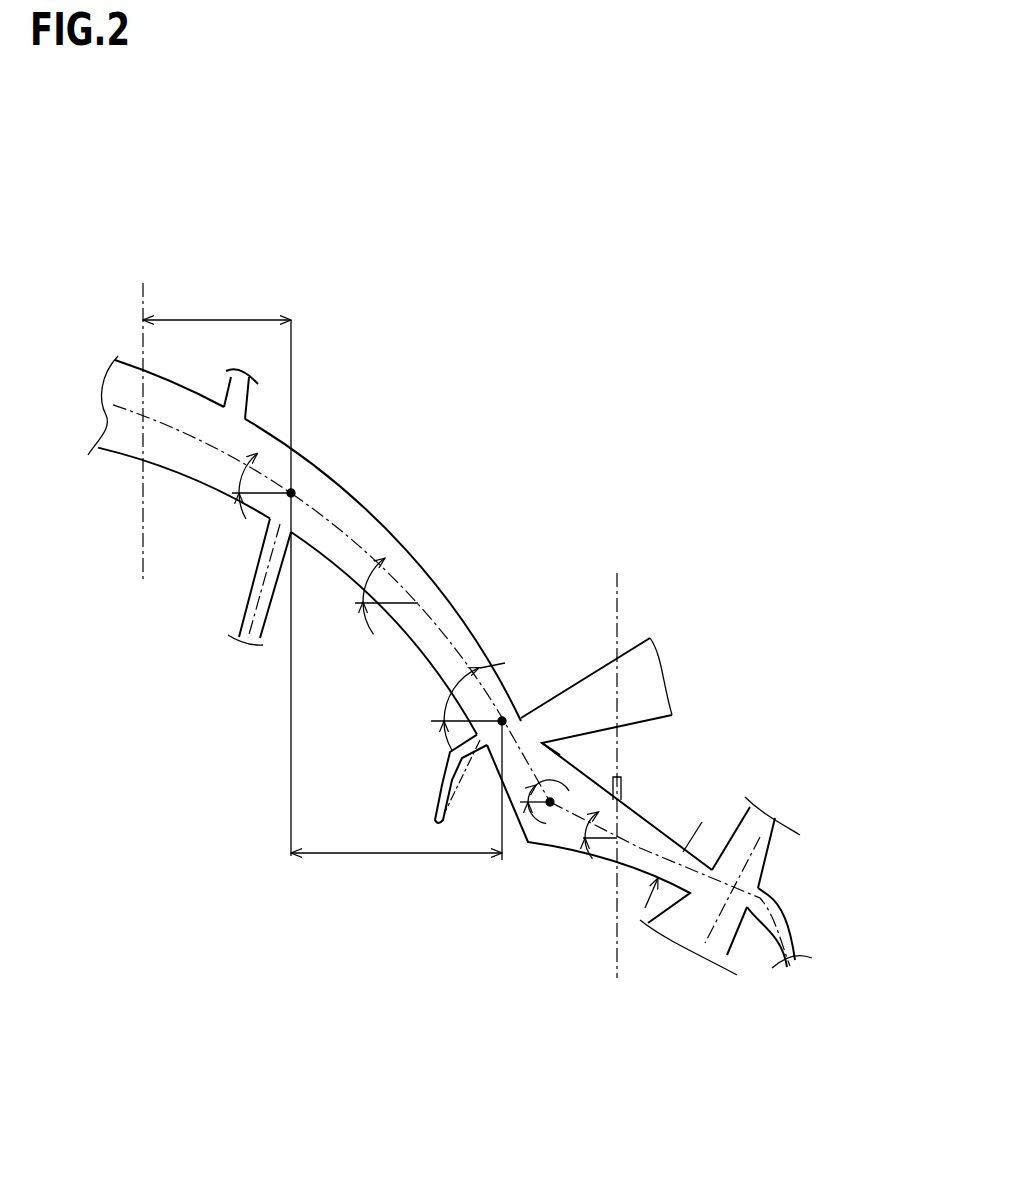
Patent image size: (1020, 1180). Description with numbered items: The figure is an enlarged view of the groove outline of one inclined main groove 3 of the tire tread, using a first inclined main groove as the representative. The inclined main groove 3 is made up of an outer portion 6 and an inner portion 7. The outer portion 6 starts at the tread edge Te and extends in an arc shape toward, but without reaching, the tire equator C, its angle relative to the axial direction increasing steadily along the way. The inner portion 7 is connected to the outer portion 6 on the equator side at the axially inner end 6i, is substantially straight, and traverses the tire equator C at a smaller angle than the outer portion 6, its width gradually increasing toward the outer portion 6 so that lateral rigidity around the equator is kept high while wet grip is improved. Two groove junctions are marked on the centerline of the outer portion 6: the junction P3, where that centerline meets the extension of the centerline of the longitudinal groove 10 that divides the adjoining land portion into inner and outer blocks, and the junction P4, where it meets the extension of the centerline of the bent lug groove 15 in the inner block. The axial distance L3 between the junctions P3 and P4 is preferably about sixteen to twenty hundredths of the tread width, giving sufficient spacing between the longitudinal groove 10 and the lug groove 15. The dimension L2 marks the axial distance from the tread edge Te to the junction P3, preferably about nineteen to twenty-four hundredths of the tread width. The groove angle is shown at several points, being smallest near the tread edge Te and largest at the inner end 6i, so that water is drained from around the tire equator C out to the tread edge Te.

The inclined main groove 3 is at (583, 482).
The outer portion 6 is at (416, 590).
The inner portion 7 is at (588, 801).
The axially inner end 6i is at (532, 743).
The longitudinal groove 10 is at (252, 593).
The lug groove 15 is at (437, 795).
The tread edge Te is at (147, 412).
The distance L2 is at (218, 320).
The axial distance between groove junctions P3 and P4 L3 is at (396, 807).
The groove junction P3 is at (291, 493).
The groove junction P4 is at (503, 719).
The tire equator C is at (617, 759).